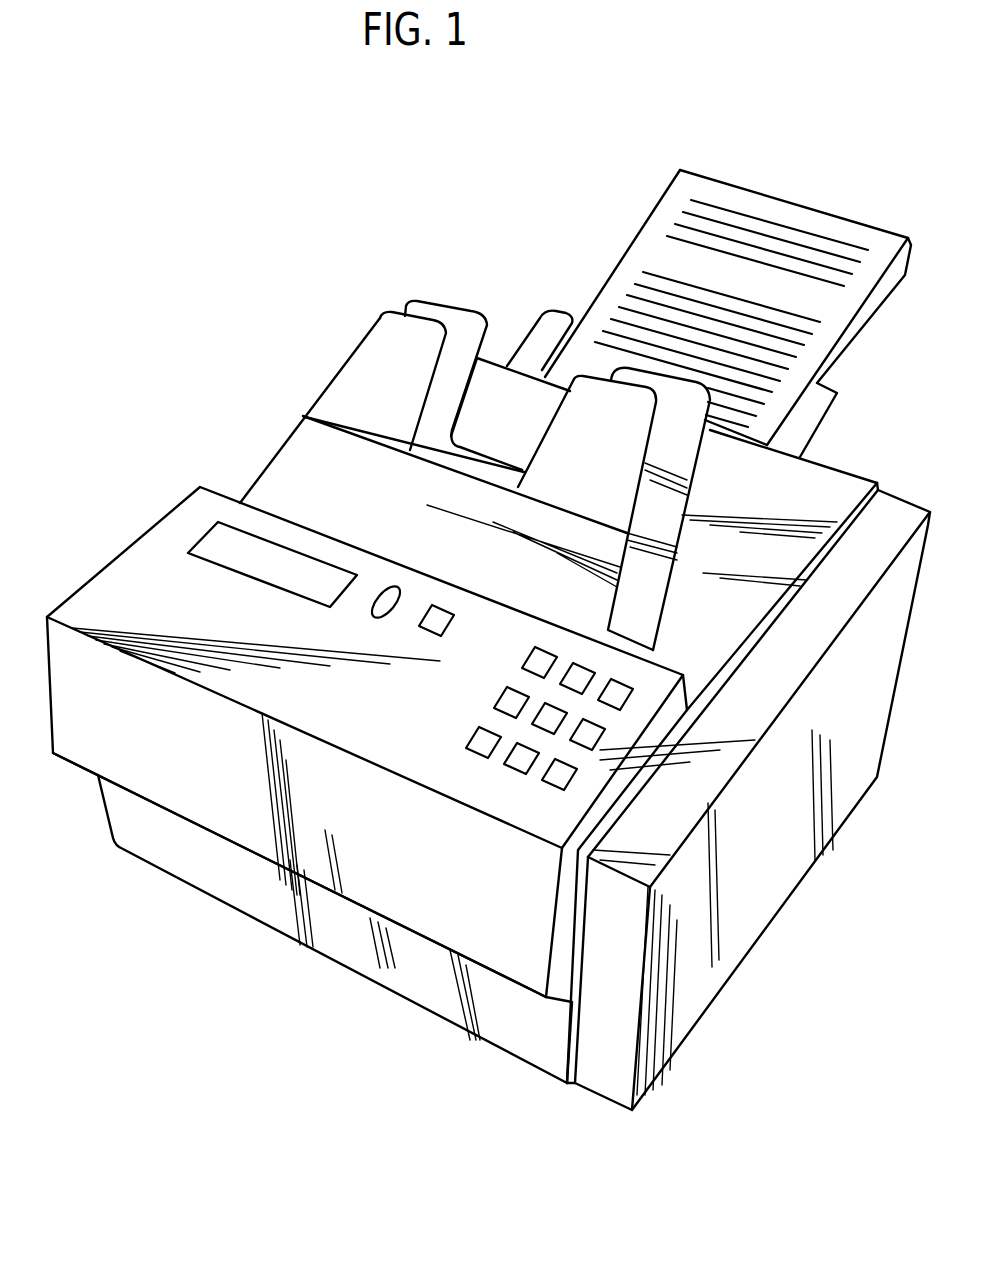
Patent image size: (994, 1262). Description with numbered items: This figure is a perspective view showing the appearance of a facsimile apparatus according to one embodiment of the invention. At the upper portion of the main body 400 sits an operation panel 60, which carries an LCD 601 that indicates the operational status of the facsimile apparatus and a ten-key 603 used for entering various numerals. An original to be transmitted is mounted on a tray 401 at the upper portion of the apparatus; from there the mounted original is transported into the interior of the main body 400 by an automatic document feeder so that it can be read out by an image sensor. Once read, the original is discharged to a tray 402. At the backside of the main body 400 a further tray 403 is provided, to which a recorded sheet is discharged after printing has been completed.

The operation panel 60 is at (248, 669).
The LCD 601 is at (225, 546).
The ten-key 603 is at (506, 766).
The main body 400 is at (780, 870).
The tray 401 is at (350, 363).
The tray 402 is at (432, 307).
The tray 403 is at (550, 312).